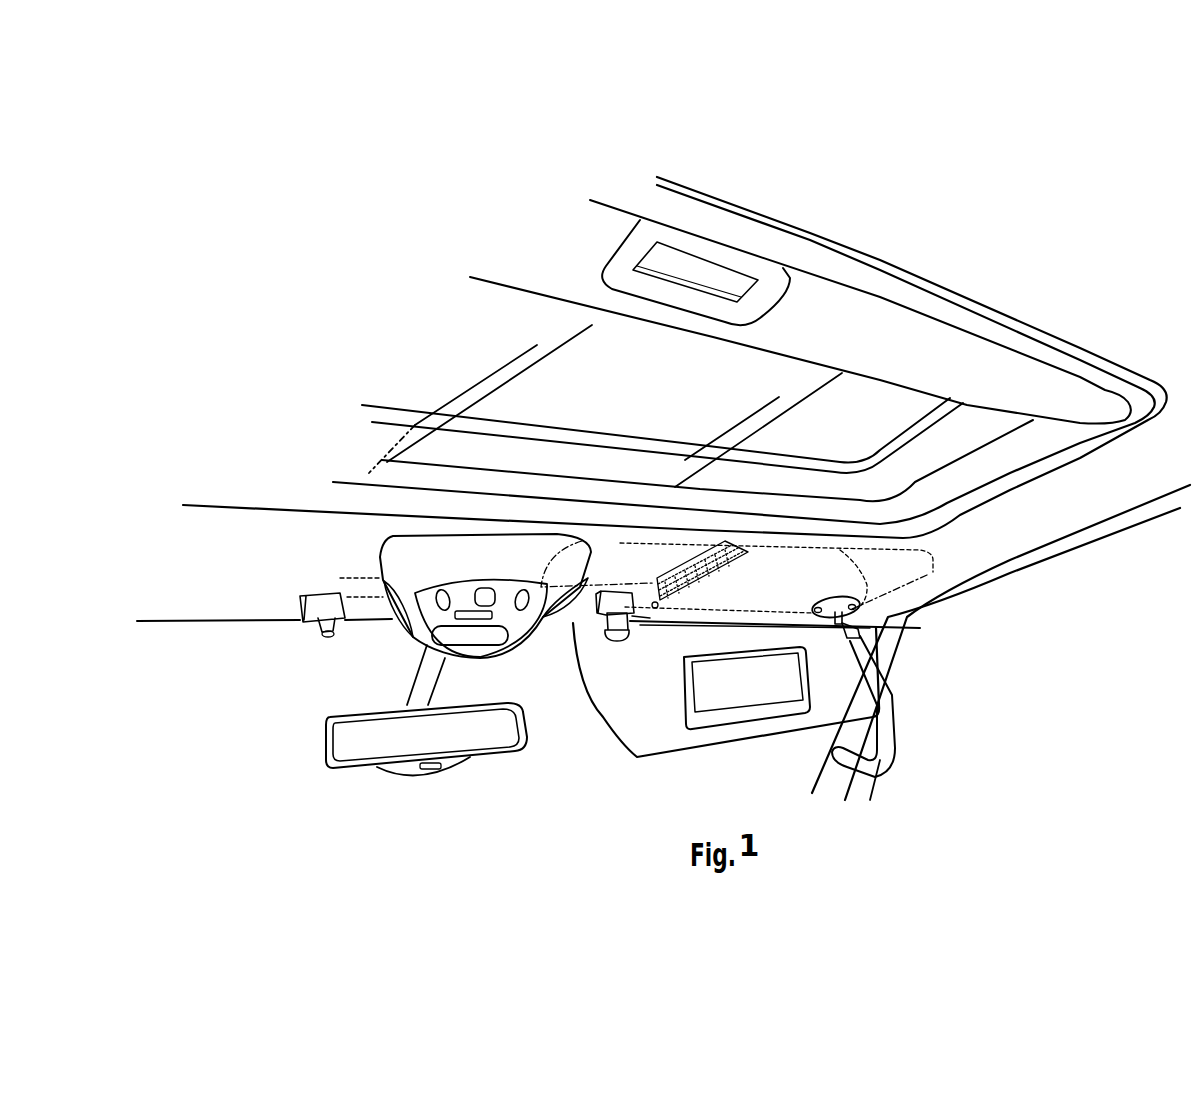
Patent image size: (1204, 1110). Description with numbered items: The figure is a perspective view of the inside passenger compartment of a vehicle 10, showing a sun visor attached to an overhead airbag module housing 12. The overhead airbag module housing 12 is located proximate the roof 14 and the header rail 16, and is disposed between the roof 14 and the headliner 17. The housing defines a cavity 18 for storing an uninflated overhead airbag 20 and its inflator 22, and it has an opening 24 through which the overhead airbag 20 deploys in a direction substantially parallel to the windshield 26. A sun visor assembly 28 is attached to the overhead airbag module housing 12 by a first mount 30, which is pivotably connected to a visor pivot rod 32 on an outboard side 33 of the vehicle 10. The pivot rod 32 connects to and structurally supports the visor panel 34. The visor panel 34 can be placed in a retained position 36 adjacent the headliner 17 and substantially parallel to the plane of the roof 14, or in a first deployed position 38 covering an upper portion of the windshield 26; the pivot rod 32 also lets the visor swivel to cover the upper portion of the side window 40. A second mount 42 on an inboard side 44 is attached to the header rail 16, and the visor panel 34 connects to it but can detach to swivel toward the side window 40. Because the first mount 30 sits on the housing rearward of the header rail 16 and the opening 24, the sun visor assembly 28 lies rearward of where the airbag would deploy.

The vehicle 10 is at (896, 240).
The overhead airbag module housing 12 is at (902, 574).
The roof 14 is at (966, 297).
The header rail 16 is at (678, 614).
The headliner 17 is at (1067, 510).
The cavity 18 is at (665, 560).
The overhead airbag 20 is at (714, 563).
The inflator 22 is at (744, 568).
The opening 24 is at (644, 632).
The windshield 26 is at (298, 688).
The sun visor assembly 28 is at (779, 752).
The first mount 30 is at (860, 635).
The visor pivot rod 32 is at (844, 631).
The outboard side 33 is at (1080, 749).
The visor panel 34 is at (663, 710).
The retained position 36 is at (626, 548).
The first deployed position 38 is at (700, 740).
The side window 40 is at (1073, 671).
The second mount 42 is at (616, 575).
The inboard side 44 is at (370, 903).